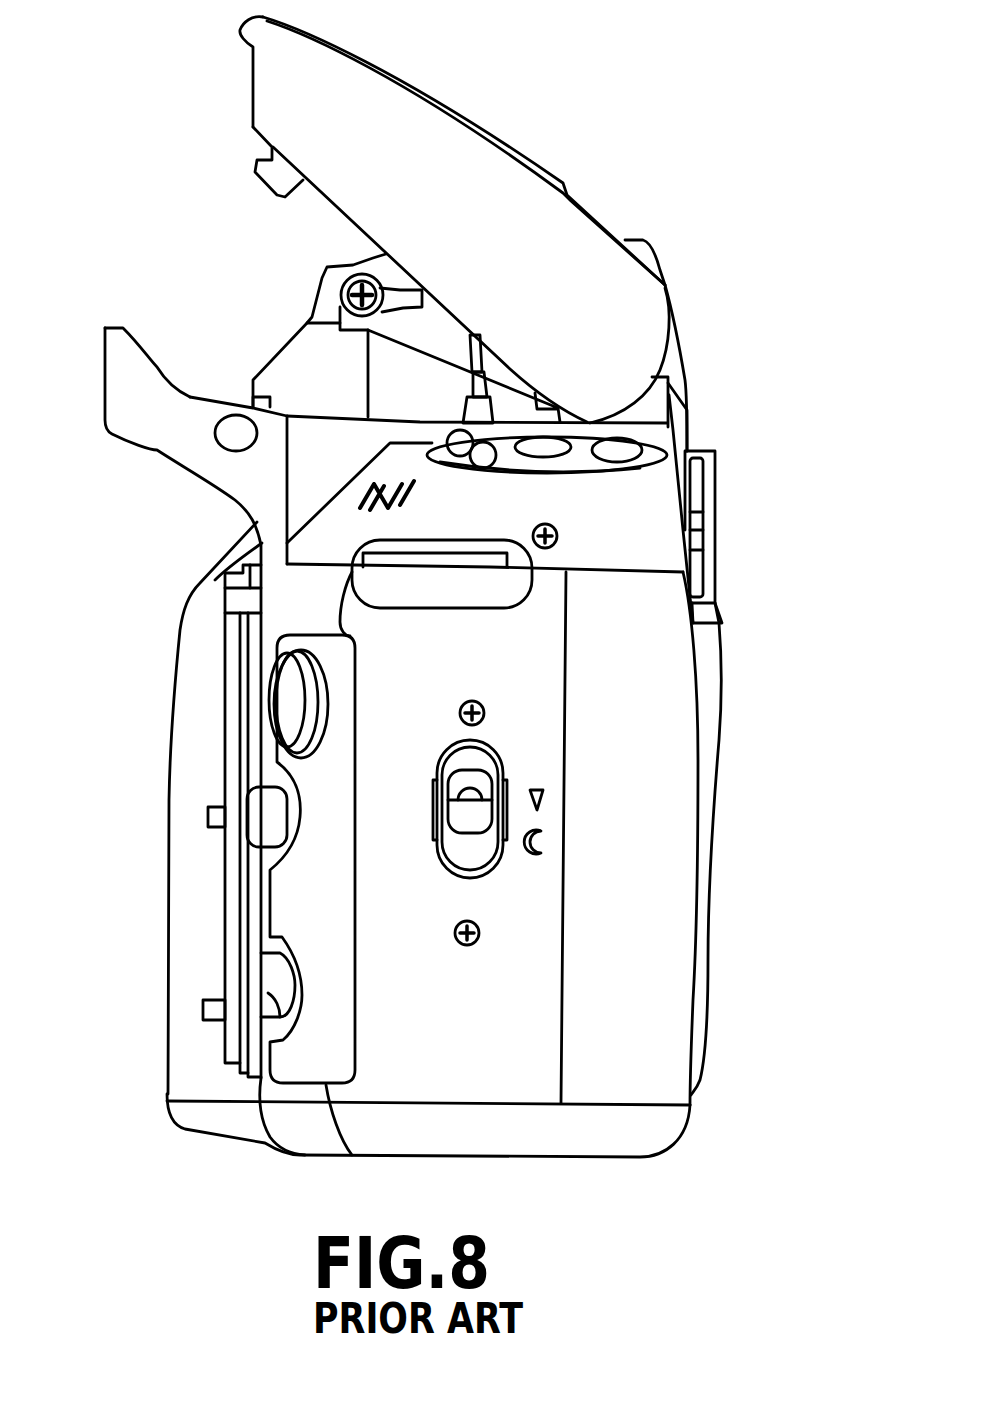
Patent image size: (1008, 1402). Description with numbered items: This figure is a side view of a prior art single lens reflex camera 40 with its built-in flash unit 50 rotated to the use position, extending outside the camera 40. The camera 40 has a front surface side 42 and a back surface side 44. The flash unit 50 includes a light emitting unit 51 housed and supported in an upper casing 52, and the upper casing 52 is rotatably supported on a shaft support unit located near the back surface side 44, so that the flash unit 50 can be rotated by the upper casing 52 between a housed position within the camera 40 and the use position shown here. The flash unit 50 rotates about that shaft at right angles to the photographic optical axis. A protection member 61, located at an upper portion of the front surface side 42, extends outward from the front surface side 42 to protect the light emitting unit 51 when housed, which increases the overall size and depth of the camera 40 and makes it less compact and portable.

The single lens reflex camera 40 is at (823, 487).
The front surface side 42 is at (168, 812).
The back surface side 44 is at (710, 843).
The built-in flash unit 50 is at (593, 210).
The light emitting unit 51 is at (257, 133).
The upper casing 52 is at (437, 123).
The protection member 61 is at (103, 435).